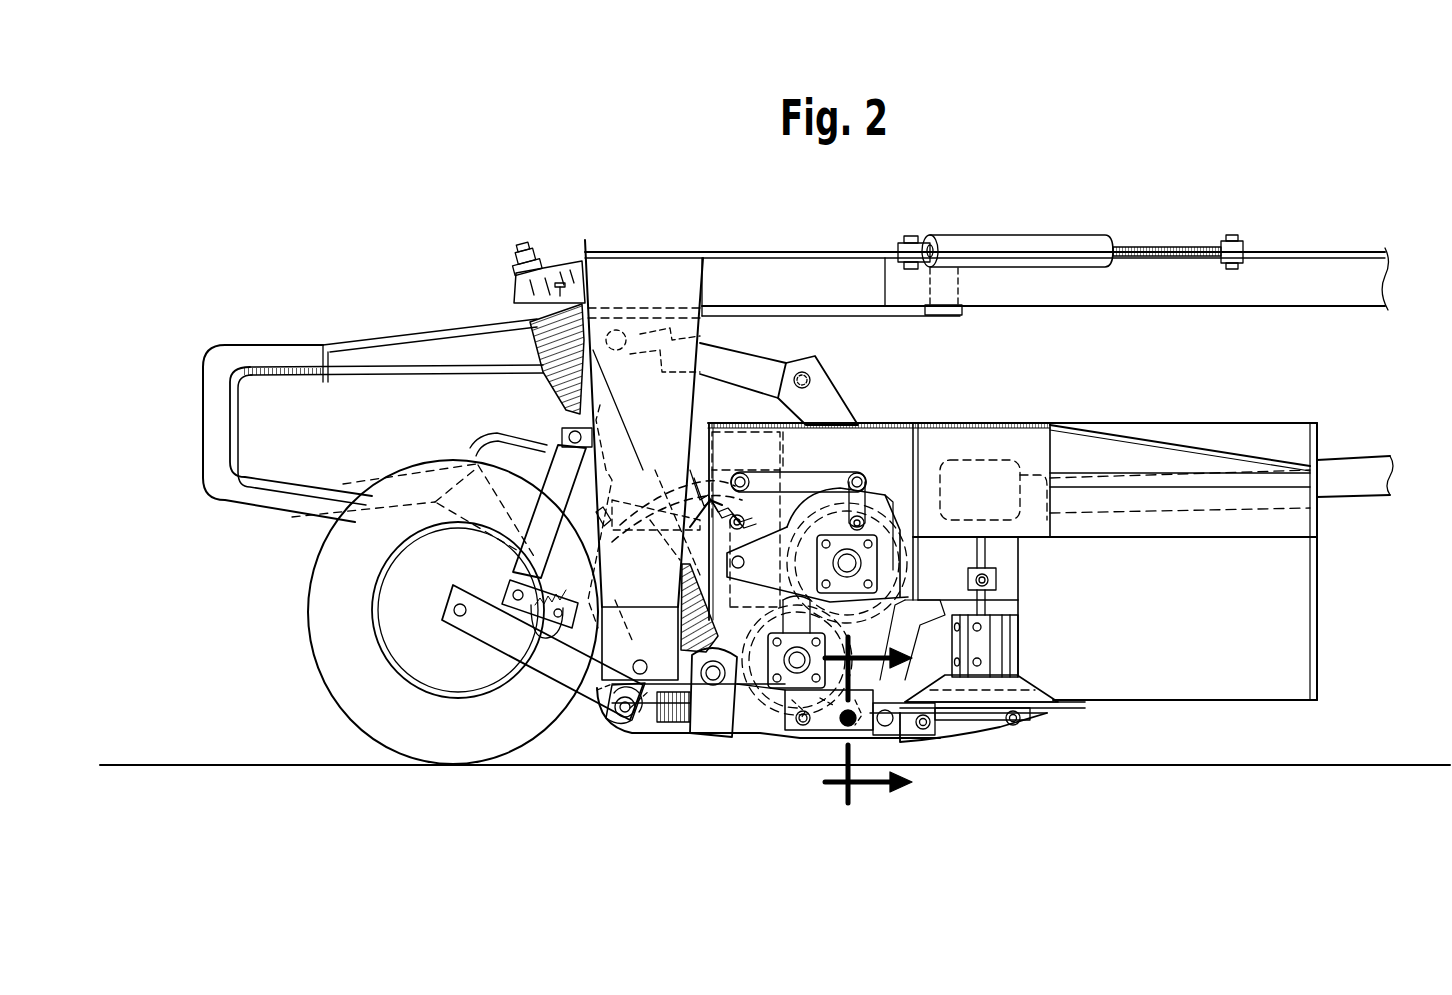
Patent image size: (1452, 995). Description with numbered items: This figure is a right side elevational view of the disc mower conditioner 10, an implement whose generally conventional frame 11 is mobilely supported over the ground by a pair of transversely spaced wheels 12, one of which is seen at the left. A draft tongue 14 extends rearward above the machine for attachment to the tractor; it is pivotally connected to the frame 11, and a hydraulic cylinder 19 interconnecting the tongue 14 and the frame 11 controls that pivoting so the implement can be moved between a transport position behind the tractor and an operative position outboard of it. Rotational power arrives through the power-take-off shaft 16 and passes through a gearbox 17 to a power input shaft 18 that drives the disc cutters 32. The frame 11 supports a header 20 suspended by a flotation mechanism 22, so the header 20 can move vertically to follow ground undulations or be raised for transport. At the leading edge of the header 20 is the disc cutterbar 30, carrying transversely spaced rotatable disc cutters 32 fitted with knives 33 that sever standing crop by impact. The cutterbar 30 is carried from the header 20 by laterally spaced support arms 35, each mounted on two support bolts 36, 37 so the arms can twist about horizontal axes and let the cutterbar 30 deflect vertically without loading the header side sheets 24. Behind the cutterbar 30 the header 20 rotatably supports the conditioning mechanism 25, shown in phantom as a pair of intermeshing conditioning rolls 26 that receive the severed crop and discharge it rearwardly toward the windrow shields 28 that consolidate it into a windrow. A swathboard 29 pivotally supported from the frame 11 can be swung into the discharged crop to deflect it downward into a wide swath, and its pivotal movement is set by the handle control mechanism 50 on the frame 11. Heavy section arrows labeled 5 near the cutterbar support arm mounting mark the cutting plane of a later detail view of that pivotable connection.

The disc mower conditioner 10 is at (412, 165).
The frame 11 is at (590, 277).
The wheels 12 is at (318, 701).
The draft tongue 14 is at (1290, 306).
The power-take-off shaft 16 is at (1360, 470).
The gearbox 17 is at (987, 462).
The power input shaft 18 is at (992, 570).
The hydraulic cylinder 19 is at (1036, 243).
The header 20 is at (902, 390).
The flotation mechanism 22 is at (530, 320).
The header side sheets 24 is at (872, 443).
The conditioning mechanism 25 is at (735, 738).
The conditioning rolls 26 is at (763, 703).
The windrow shields 28 is at (280, 520).
The swathboard 29 is at (575, 553).
The disc cutterbar 30 is at (1150, 723).
The disc cutters 32 is at (1033, 695).
The knives 33 is at (1080, 713).
The support arms 35 is at (920, 742).
The support bolt 36 is at (890, 725).
The support bolt 37 is at (830, 750).
The handle control mechanism 50 is at (660, 452).
The section line 5- 5 is at (868, 724).